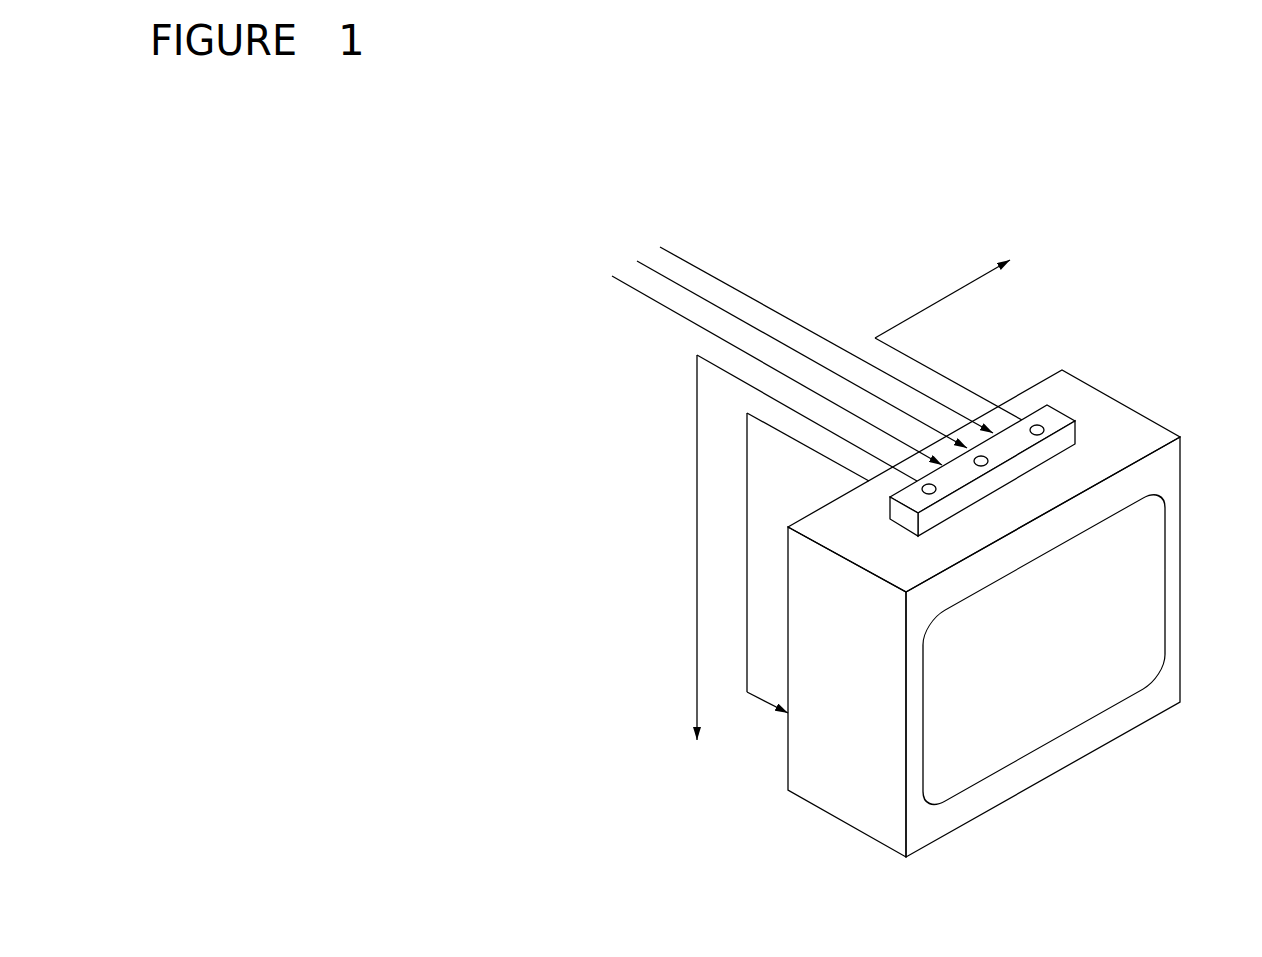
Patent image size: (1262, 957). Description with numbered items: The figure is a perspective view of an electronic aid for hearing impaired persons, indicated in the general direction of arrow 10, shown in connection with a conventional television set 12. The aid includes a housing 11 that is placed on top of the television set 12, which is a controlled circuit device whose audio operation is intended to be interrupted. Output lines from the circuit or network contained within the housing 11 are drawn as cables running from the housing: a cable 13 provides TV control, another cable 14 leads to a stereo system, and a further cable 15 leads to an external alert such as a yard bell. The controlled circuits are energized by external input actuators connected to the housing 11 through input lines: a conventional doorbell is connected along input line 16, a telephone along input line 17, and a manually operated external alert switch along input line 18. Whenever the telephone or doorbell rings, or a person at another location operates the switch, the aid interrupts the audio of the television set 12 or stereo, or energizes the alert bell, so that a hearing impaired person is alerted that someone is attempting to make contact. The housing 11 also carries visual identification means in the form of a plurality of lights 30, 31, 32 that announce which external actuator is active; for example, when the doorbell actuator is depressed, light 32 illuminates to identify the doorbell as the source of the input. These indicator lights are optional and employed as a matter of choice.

The electronic aid for hearing impaired persons 10 is at (522, 487).
The housing 11 is at (1060, 412).
The television set 12 is at (1145, 415).
The cable for TV control 13 is at (760, 700).
The cable 14 is at (959, 325).
The cable 15 is at (696, 542).
The input line 16 is at (692, 263).
The input line 17 is at (757, 330).
The input line 18 is at (657, 303).
The light 30 is at (932, 494).
The light 31 is at (983, 466).
The light 32 is at (1039, 436).